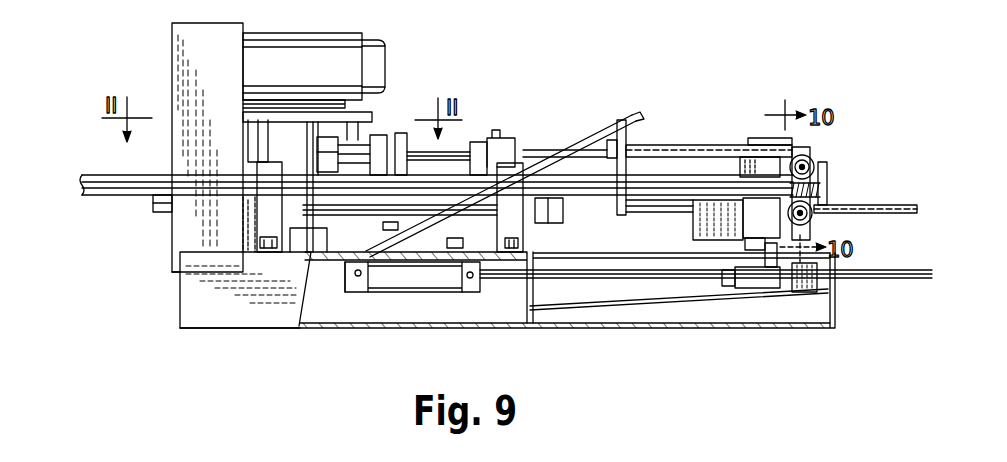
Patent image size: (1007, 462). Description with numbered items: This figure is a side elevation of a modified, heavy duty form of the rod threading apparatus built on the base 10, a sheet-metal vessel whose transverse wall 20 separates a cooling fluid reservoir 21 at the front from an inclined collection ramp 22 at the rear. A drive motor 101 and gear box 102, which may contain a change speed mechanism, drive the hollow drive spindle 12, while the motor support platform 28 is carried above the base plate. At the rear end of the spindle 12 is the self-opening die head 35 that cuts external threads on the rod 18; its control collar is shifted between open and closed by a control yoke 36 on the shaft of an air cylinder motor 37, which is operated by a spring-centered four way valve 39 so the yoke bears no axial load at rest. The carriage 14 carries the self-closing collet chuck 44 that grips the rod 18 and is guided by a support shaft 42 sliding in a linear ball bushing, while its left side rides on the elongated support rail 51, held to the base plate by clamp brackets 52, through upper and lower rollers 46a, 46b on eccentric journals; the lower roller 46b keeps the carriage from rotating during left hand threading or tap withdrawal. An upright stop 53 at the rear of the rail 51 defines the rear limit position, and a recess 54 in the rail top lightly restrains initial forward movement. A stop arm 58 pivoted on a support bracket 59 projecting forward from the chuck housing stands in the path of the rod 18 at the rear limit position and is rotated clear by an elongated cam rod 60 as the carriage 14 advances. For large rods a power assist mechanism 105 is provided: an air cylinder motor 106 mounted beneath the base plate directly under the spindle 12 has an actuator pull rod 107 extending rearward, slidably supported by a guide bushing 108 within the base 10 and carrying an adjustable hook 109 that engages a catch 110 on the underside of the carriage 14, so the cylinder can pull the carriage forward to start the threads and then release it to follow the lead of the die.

The base 10 is at (242, 334).
The drive spindle 12 is at (162, 198).
The carriage 14 is at (818, 139).
The rod 18 is at (908, 214).
The transverse wall 20 is at (530, 316).
The reservoir 21 is at (487, 322).
The collection ramp 22 is at (700, 305).
The support platform 28 is at (370, 112).
The self-opening die head 35 is at (548, 205).
The control yoke 36 is at (490, 140).
The air cylinder motor 37 is at (400, 135).
The spring-centered four way valve 39 is at (345, 252).
The support shaft 42 is at (597, 190).
The self-closing collet chuck 44 is at (727, 208).
The upper roller 46a is at (813, 163).
The lower roller 46b is at (812, 216).
The support rail 51 is at (118, 185).
The clamp brackets 52 is at (265, 215).
The upright stop 53 is at (827, 175).
The recess 54 is at (816, 188).
The stop arm 58 is at (627, 130).
The support bracket 59 is at (728, 146).
The cam rod 60 is at (600, 128).
The drive motor 101 is at (315, 80).
The gear box 102 is at (237, 61).
The power assist mechanism 105 is at (434, 302).
The air cylinder motor 106 is at (415, 282).
The actuator pull rod 107 is at (615, 283).
The guide bushing 108 is at (818, 282).
The hook 109 is at (760, 290).
The catch 110 is at (750, 248).